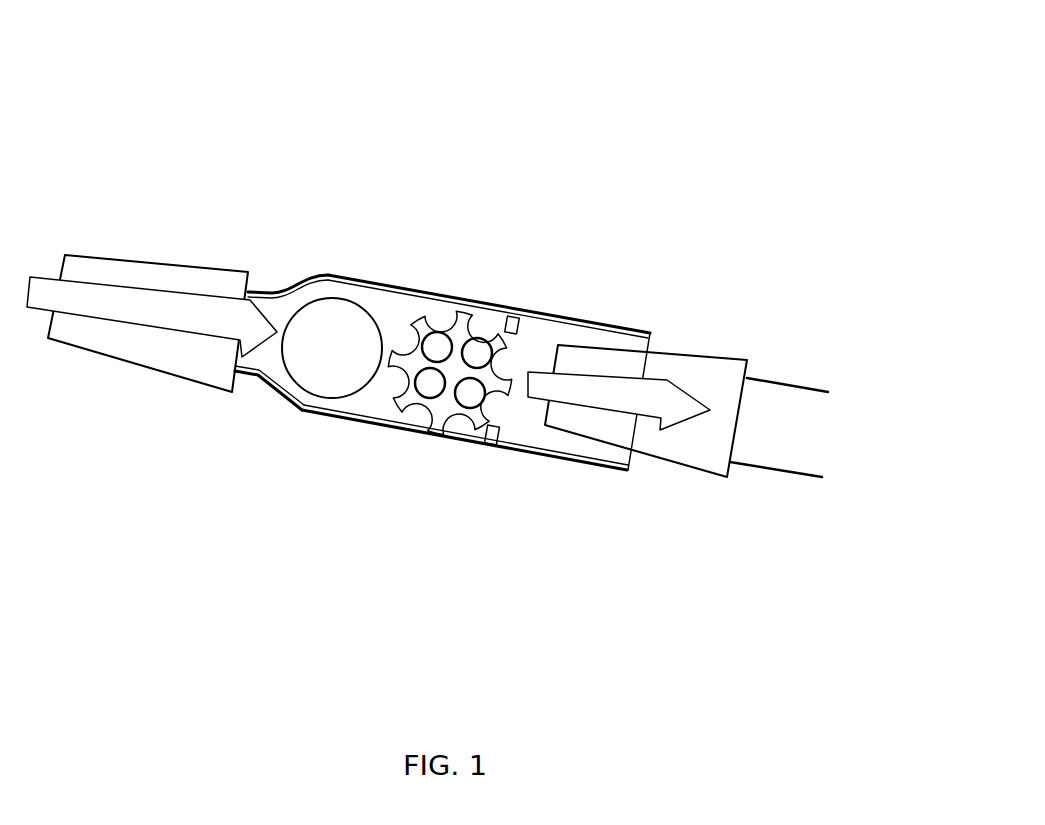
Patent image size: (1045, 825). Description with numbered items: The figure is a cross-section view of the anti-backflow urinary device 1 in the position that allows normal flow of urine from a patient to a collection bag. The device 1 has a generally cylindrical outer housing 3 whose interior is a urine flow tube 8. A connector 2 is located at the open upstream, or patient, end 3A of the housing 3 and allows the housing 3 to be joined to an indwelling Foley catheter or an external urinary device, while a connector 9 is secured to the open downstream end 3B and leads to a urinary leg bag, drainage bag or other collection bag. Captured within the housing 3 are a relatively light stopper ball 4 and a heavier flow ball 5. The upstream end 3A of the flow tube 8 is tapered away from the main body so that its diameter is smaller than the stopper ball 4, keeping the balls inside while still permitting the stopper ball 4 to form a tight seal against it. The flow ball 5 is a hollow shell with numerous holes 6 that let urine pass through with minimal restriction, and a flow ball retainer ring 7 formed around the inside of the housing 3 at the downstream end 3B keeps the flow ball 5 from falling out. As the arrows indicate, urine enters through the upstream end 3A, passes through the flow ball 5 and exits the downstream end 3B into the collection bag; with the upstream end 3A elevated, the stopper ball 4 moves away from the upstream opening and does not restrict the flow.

The anti-backflow urinary device 1 is at (237, 155).
The connector 2 is at (182, 377).
The outer housing 3 is at (605, 322).
The upstream end 3A is at (258, 275).
The downstream end 3B is at (658, 338).
The stopper ball 4 is at (337, 298).
The flow ball 5 is at (461, 318).
The holes 6 is at (413, 418).
The flow ball retainer ring 7 is at (493, 450).
The urine flow tube 8 is at (545, 327).
The connector 9 is at (672, 462).